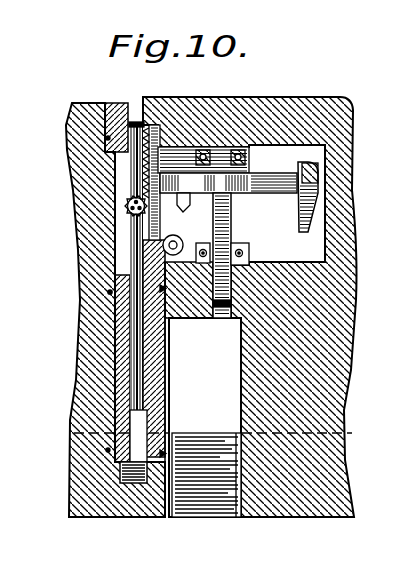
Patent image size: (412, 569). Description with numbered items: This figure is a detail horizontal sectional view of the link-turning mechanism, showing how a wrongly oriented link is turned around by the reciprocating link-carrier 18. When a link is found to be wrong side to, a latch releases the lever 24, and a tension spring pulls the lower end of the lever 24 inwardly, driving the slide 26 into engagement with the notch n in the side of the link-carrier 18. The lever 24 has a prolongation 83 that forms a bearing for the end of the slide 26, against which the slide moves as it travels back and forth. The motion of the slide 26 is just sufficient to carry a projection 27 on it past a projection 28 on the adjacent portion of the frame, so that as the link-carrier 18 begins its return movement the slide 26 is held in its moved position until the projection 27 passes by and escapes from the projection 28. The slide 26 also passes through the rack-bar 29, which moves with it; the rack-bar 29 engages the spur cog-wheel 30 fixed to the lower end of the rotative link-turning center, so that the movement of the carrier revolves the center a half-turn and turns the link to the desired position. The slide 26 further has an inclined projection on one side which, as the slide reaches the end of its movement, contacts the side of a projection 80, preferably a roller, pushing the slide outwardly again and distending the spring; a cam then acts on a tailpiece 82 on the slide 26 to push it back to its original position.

The link-carrier 18 is at (140, 483).
The lever 24 is at (320, 174).
The slide 26 is at (273, 189).
The projection 27 is at (228, 98).
The projection 28 is at (182, 209).
The rack-bar 29 is at (150, 230).
The spur cog-wheel 30 is at (127, 203).
The projection (roller) 80 is at (176, 256).
The tailpiece 82 is at (221, 233).
The prolongation 83 is at (315, 202).
The notch n is at (137, 298).